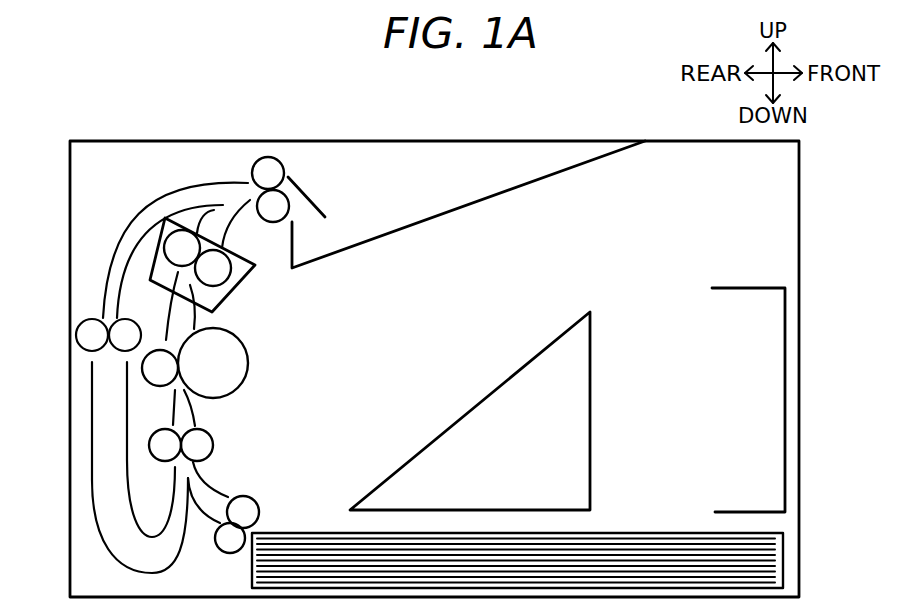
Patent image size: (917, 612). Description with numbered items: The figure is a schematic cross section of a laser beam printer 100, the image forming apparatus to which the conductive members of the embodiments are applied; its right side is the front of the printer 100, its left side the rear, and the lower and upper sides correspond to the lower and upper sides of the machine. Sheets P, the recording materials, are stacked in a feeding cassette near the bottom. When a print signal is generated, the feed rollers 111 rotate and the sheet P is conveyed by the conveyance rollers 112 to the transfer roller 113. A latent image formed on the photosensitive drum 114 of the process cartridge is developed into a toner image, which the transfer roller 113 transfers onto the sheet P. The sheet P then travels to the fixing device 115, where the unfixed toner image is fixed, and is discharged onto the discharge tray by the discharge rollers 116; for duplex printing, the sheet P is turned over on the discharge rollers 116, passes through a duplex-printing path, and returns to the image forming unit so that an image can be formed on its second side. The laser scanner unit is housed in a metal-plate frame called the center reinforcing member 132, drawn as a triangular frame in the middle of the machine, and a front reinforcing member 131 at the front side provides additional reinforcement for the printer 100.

The laser beam printer 100 is at (160, 116).
The feed rollers 111 is at (257, 500).
The conveyance rollers 112 is at (203, 443).
The transfer roller 113 is at (153, 368).
The photosensitive drum 114 is at (248, 363).
The fixing device 115 is at (236, 284).
The discharge rollers 116 is at (272, 168).
The front reinforcing member 131 is at (743, 288).
The center reinforcing member 132 is at (487, 413).
The sheet P is at (660, 543).